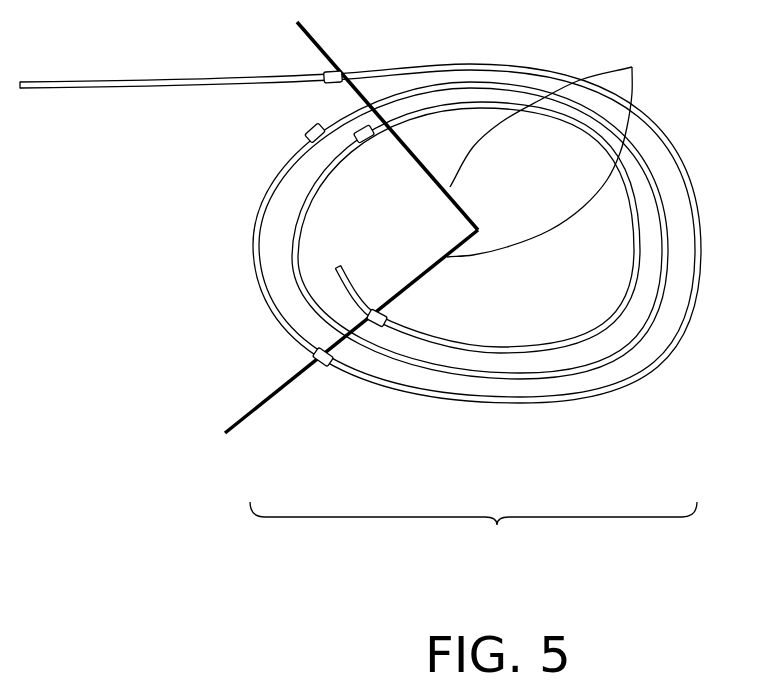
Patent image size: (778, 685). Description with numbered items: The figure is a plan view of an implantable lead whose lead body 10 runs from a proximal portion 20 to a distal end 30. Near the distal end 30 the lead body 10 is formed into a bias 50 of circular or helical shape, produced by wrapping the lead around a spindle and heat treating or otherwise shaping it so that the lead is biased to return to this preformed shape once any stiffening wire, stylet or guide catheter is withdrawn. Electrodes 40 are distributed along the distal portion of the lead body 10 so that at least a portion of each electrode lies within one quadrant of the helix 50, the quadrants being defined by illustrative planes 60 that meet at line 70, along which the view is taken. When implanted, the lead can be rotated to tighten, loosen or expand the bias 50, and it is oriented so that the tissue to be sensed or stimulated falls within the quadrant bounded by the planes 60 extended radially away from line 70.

The lead body 10 is at (697, 182).
The proximal portion 20 is at (152, 82).
The distal end 30 is at (353, 291).
The electrodes 40 is at (305, 130).
The bias region 50 is at (473, 533).
The illustrative planes 60 is at (553, 149).
The line 70 is at (483, 232).